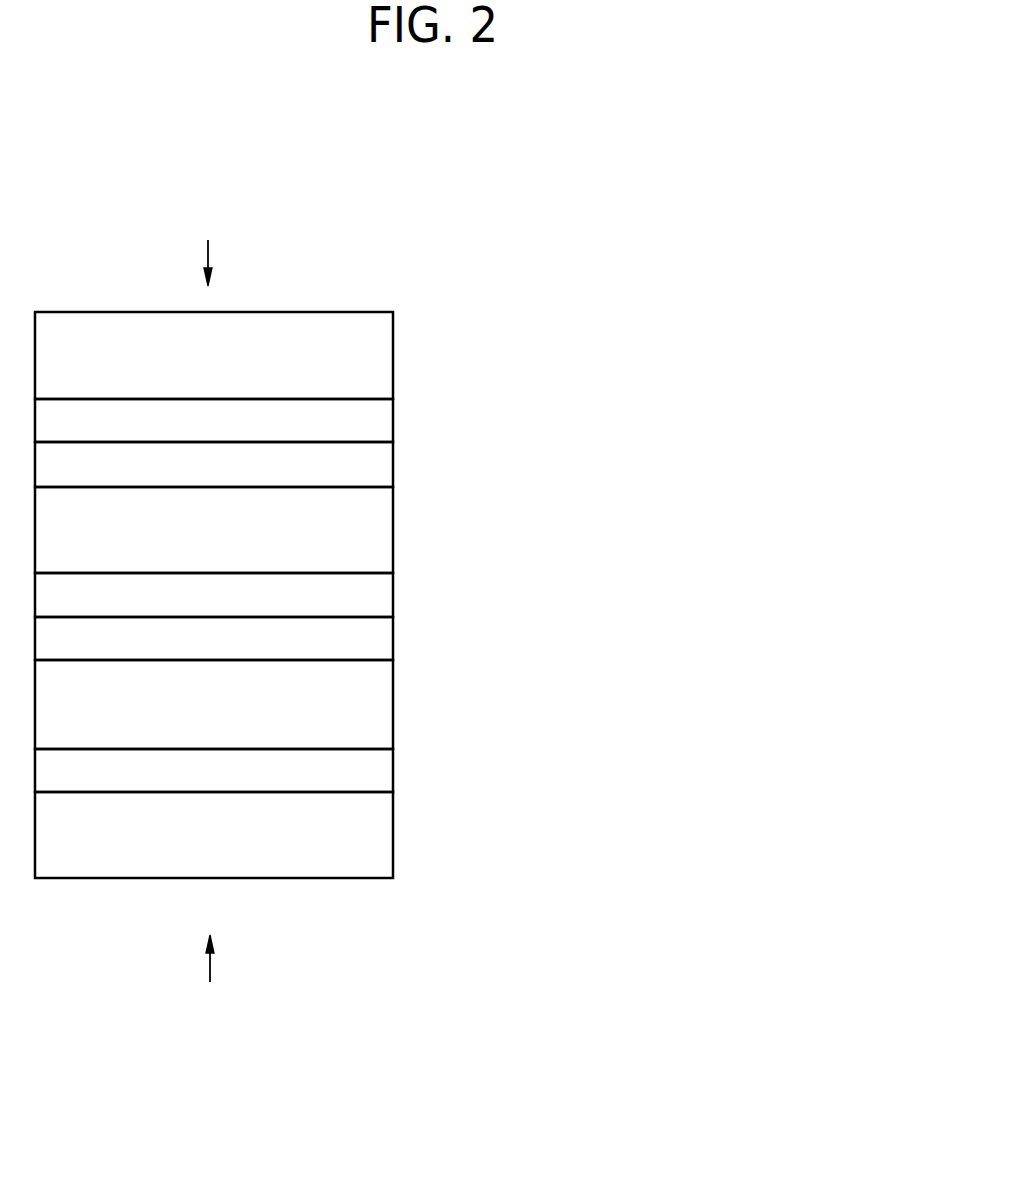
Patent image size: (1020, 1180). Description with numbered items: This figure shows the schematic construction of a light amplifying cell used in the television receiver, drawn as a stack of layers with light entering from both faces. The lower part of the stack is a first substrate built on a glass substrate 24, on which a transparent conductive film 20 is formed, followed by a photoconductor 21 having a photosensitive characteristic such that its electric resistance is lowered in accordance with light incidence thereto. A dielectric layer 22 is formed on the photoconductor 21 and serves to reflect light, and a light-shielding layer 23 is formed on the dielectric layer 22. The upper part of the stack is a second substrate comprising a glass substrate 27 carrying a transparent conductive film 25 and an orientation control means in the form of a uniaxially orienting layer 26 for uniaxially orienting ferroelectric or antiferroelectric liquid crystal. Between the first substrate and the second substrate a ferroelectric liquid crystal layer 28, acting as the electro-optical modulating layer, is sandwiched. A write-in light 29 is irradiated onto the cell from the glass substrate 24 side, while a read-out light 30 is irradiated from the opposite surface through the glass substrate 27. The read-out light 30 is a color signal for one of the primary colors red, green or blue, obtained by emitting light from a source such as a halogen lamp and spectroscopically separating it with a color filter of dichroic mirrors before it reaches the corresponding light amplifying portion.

The transparent conductive film 20 is at (320, 768).
The photoconductor 21 is at (333, 700).
The dielectric layer 22 is at (332, 637).
The light-shielding layer 23 is at (332, 588).
The glass substrate 24 is at (297, 835).
The transparent conductive film 25 is at (295, 415).
The uniaxially orienting layer 26 is at (320, 463).
The glass substrate 27 is at (284, 352).
The ferroelectric liquid crystal layer 28 is at (332, 522).
The write-in light 29 is at (225, 974).
The read-out light 30 is at (231, 244).